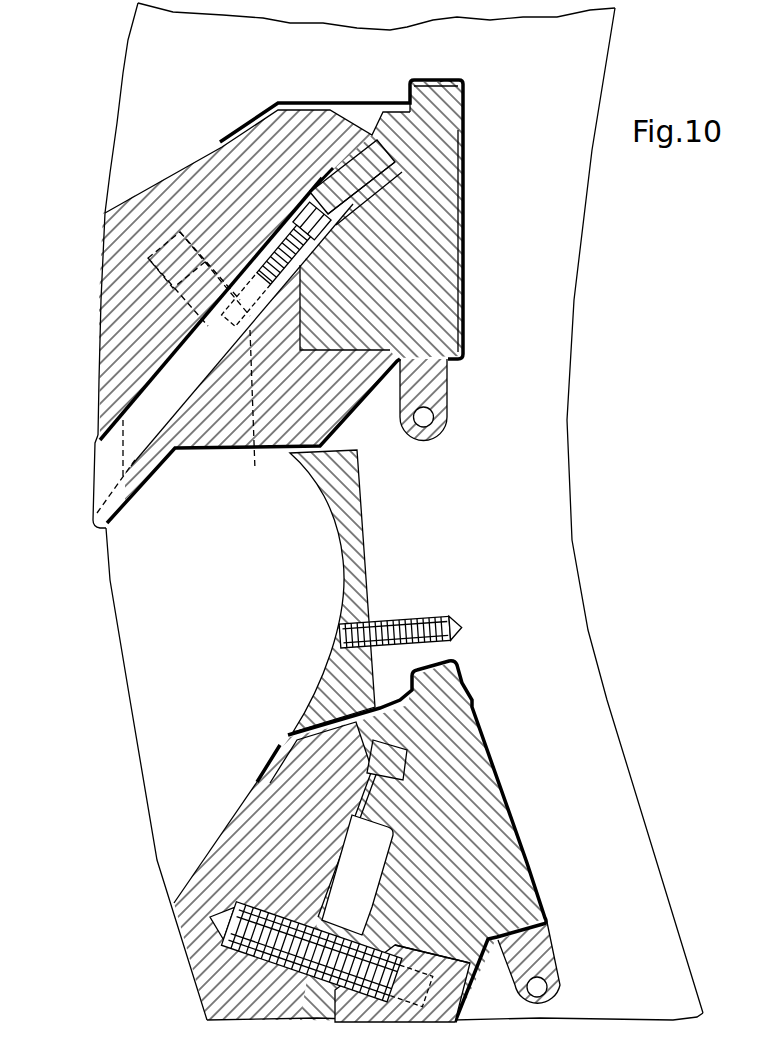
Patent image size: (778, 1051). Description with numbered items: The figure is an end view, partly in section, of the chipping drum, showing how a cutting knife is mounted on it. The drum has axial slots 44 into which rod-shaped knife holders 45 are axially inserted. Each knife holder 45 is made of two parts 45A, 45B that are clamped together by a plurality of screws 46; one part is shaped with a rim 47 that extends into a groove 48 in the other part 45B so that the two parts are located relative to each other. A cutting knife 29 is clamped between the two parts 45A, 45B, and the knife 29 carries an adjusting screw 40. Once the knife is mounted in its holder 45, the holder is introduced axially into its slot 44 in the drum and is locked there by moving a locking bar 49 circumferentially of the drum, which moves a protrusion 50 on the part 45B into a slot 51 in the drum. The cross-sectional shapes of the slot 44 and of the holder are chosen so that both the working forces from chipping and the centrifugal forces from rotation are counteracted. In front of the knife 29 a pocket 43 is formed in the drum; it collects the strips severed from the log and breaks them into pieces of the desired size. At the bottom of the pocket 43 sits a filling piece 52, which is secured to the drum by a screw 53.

The cutting knife 29 is at (135, 458).
The adjusting screw 40 is at (335, 236).
The pocket 43 is at (128, 630).
The axial slot 44 is at (350, 112).
The knife holder 45 is at (446, 175).
The knife holder part 45A is at (317, 120).
The knife holder part 45B is at (442, 132).
The screw 46 is at (251, 458).
The rim 47 is at (375, 155).
The groove 48 is at (370, 180).
The locking bar 49 is at (437, 387).
The protrusion 50 is at (463, 86).
The slot 51 is at (446, 86).
The filling piece 52 is at (362, 547).
The screw 53 is at (338, 632).